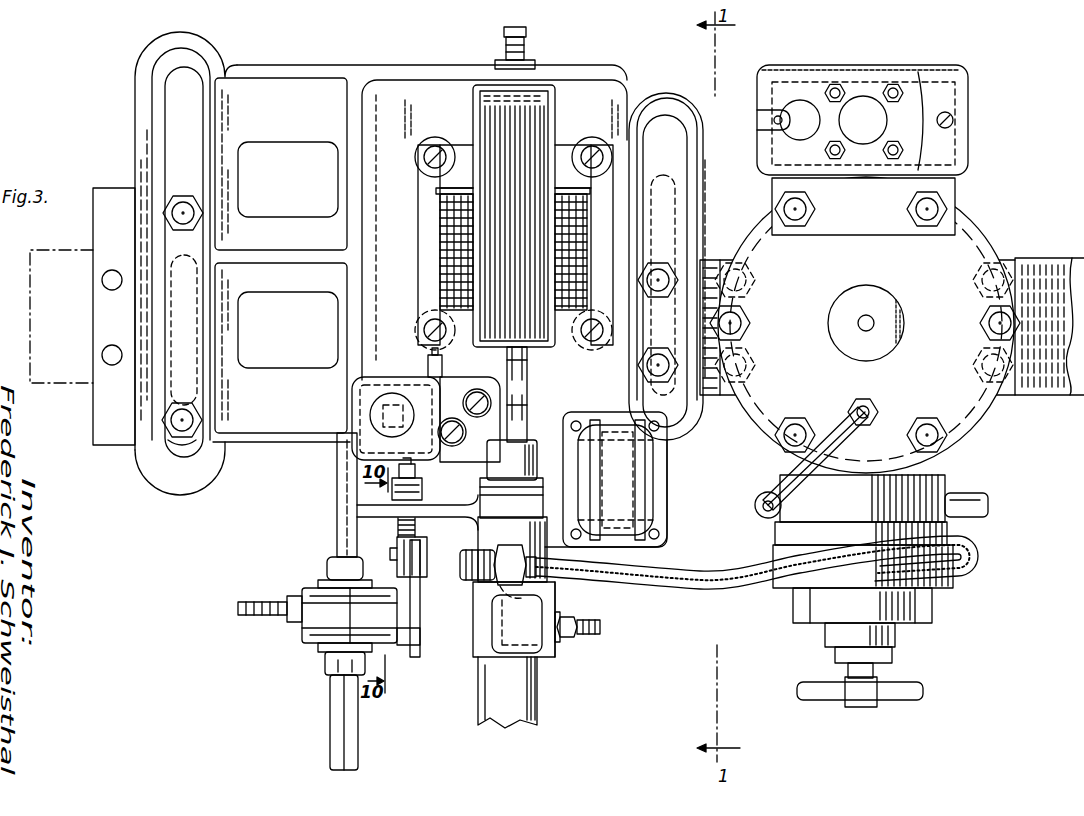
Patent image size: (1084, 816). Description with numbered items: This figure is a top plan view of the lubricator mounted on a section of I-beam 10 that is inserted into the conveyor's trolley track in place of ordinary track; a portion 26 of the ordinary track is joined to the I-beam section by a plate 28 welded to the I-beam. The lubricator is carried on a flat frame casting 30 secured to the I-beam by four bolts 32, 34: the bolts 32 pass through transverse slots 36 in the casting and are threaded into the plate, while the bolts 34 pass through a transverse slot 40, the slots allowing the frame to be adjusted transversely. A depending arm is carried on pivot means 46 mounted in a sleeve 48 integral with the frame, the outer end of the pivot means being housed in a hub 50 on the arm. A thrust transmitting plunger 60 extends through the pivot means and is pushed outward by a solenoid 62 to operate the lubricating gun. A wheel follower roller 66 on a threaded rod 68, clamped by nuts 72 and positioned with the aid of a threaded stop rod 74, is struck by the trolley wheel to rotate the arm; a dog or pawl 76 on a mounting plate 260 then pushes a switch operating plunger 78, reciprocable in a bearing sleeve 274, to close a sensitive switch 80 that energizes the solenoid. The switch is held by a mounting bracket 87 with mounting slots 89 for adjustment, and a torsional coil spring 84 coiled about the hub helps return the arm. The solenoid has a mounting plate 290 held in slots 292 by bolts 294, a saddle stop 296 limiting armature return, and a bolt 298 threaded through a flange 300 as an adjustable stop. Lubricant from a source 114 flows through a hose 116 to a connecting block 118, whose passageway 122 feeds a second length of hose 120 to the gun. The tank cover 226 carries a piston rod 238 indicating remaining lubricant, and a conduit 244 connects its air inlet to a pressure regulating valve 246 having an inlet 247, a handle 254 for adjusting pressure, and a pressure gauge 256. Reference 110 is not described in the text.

The I-beam section 10 is at (1050, 266).
The ordinary track portion 26 is at (52, 268).
The plate 28 is at (93, 410).
The frame casting 30 is at (314, 66).
The bolts 32 is at (170, 445).
The bolts 34 is at (680, 250).
The transverse slots 36 is at (176, 143).
The transverse slot 40 is at (670, 186).
The pivot means 46 is at (530, 455).
The sleeve 48 is at (495, 536).
The hub 50 is at (560, 664).
The thrust transmitting plunger 60 is at (527, 428).
The solenoid 62 is at (440, 270).
The roller 66 is at (348, 400).
The threaded rod 68 is at (343, 512).
The nuts 72 is at (328, 662).
The threaded stop rod 74 is at (254, 602).
The dog or pawl 76 is at (422, 558).
The switch operating plunger 78 is at (397, 544).
The sensitive switch 80 is at (385, 418).
The torsional coil spring 84 is at (470, 580).
The mounting bracket 87 is at (450, 386).
The mounting slots 89 is at (481, 392).
The solenoid 110 is at (655, 496).
The source of lubricant 114 is at (995, 250).
The hose 116 is at (640, 588).
The connecting block 118 is at (492, 632).
The second length of hose 120 is at (588, 634).
The passageway 122 is at (580, 612).
The cover 226 is at (985, 432).
The piston rod 238 is at (872, 324).
The conduit 244 is at (840, 430).
The pressure regulating valve 246 is at (800, 592).
The inlet 247 is at (982, 516).
The handle 254 is at (808, 688).
The pressure gauge 256 is at (800, 514).
The mounting plate 260 is at (414, 650).
The bearing sleeve 274 is at (425, 494).
The mounting plate 290 is at (430, 212).
The slots 292 is at (434, 146).
The bolts 294 is at (428, 157).
The saddle stop 296 is at (546, 92).
The bolt 298 is at (522, 56).
The flange 300 is at (462, 54).